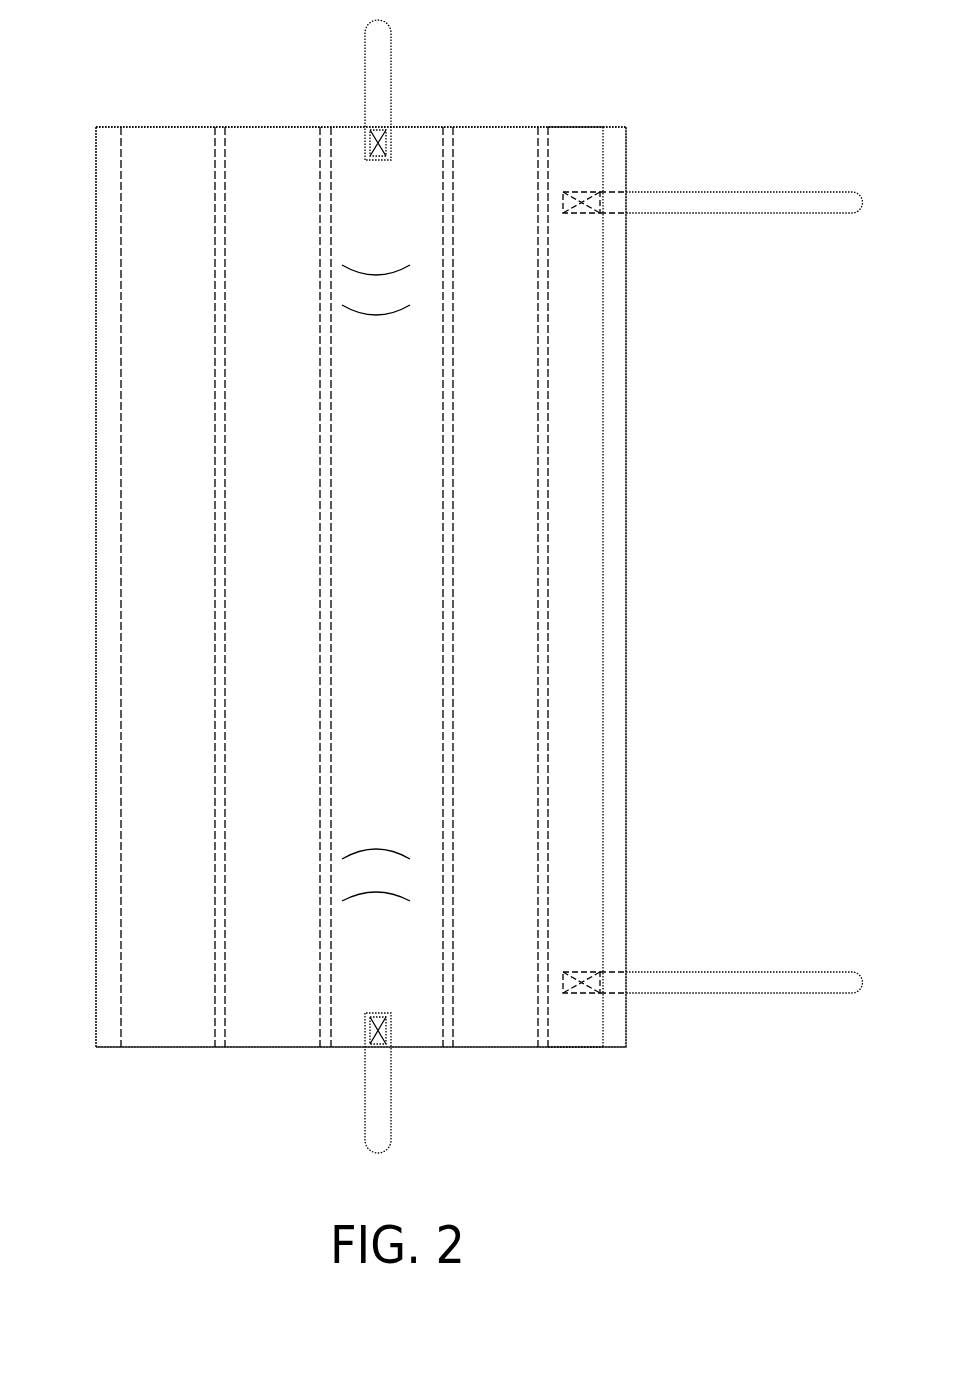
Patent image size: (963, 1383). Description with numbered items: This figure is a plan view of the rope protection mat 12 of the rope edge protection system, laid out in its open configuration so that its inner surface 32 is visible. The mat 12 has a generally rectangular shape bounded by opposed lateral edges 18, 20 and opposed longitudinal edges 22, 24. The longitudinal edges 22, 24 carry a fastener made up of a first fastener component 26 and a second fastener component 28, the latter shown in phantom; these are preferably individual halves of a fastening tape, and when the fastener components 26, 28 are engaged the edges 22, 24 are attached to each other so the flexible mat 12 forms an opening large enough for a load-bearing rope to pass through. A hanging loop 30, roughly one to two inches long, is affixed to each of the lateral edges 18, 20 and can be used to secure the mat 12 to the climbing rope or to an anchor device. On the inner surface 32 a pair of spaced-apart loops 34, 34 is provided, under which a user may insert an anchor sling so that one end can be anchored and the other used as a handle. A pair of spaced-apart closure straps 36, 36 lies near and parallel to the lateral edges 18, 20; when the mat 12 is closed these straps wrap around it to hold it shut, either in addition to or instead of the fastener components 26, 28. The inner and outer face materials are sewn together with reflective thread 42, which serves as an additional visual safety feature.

The rope protection mat 12 is at (597, 100).
The lateral edge 18 is at (476, 127).
The lateral edge 20 is at (468, 1047).
The longitudinal edge 22 is at (627, 570).
The longitudinal edge 24 is at (96, 581).
The first fastener component 26 is at (617, 615).
The second fastener component 28 is at (108, 648).
The hanging loop 30 is at (381, 44).
The inner surface 32 is at (583, 412).
The loop 34 is at (383, 297).
The closure strap 36 is at (724, 207).
The reflective thread 42 is at (225, 593).